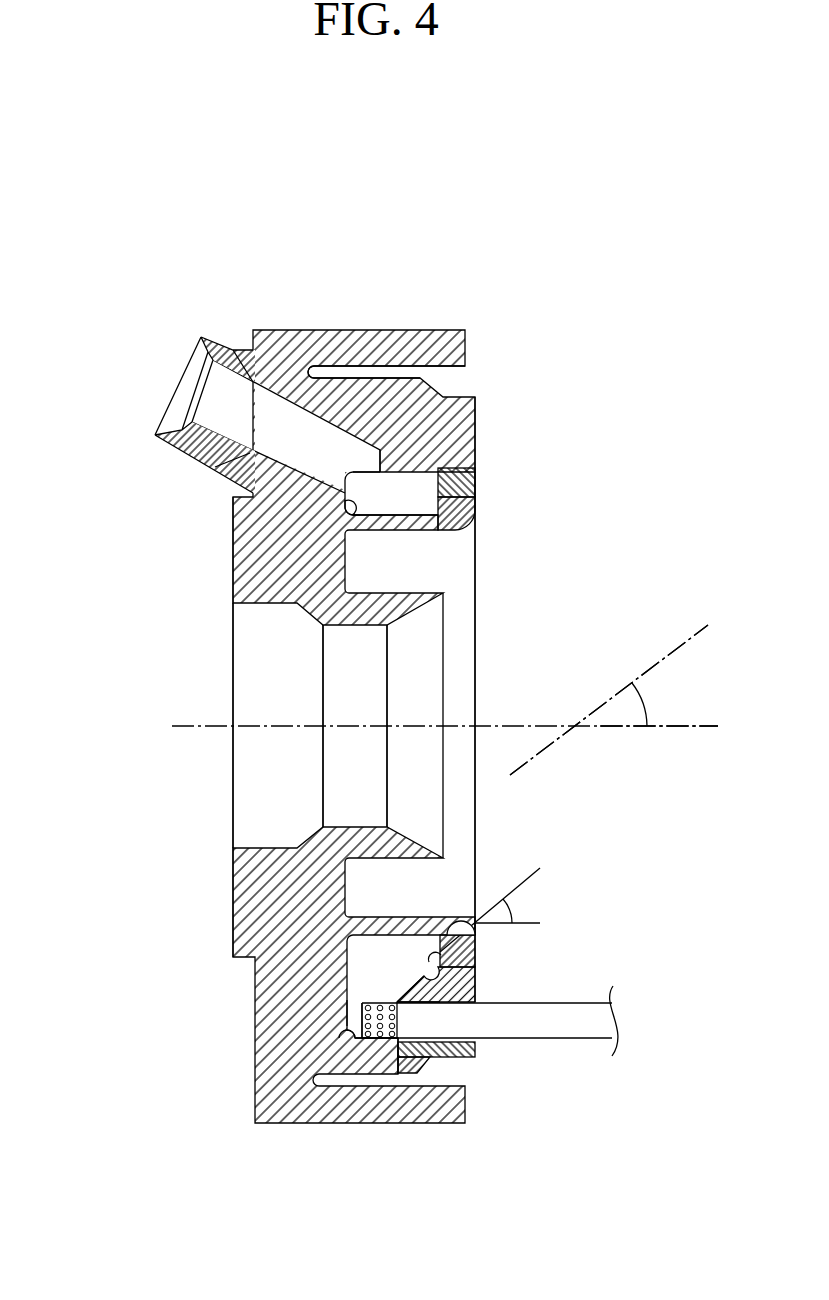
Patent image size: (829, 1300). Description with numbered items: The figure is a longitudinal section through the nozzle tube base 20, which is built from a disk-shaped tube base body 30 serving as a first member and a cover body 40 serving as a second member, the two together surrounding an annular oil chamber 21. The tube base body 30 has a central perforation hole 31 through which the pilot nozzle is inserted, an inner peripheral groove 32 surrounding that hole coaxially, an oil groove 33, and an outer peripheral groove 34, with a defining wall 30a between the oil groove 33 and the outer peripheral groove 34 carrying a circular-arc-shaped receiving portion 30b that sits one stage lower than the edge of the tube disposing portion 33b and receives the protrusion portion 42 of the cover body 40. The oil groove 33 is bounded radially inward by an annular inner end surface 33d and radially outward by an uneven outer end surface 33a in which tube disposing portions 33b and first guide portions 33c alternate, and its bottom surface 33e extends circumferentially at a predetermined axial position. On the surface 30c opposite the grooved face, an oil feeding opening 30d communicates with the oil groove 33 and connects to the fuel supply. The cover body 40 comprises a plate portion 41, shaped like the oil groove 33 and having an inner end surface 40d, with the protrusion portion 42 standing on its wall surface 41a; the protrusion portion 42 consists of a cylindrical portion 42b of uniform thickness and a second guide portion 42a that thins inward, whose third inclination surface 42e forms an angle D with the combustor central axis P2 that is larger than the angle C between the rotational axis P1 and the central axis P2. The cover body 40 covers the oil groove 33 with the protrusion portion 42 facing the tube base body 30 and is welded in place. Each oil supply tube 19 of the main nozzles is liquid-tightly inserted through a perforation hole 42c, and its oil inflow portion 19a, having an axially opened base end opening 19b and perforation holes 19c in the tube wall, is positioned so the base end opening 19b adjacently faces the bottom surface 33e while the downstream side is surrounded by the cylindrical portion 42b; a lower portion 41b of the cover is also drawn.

The oil supply tube 19 is at (570, 1038).
The oil inflow portion 19a is at (360, 1066).
The base end opening 19b is at (347, 1030).
The perforation holes 19c is at (392, 1038).
The nozzle tube base 20 is at (408, 158).
The oil chamber 21 is at (426, 504).
The tube base body 30 is at (379, 316).
The defining wall 30a is at (398, 1046).
The receiving portion 30b is at (412, 1052).
The surface 30c is at (233, 522).
The oil feeding opening 30d is at (160, 360).
The central perforation hole 31 is at (460, 667).
The inner peripheral groove 32 is at (492, 563).
The oil groove 33 is at (426, 492).
The outer end surface 33a is at (390, 502).
The tube disposing portion 33b is at (340, 1025).
The first guide portion 33c is at (393, 472).
The inner end surface 33d is at (363, 498).
The bottom surface 33e is at (353, 513).
The outer peripheral groove 34 is at (462, 375).
The cover body 40 is at (484, 474).
The inner end surface 40d is at (458, 926).
The plate portion 41 is at (424, 945).
The wall surface 41a is at (440, 957).
The seal ring lower portion 41b is at (452, 1058).
The protrusion portion 42 is at (167, 998).
The second guide portion 42a is at (400, 990).
The cylindrical portion 42b is at (364, 1015).
The perforation hole 42c is at (458, 1038).
The third inclination surface 42e is at (398, 996).
The angle C is at (609, 700).
The angle D is at (515, 910).
The rotational axis P1 is at (693, 630).
The central axis P2 is at (683, 728).